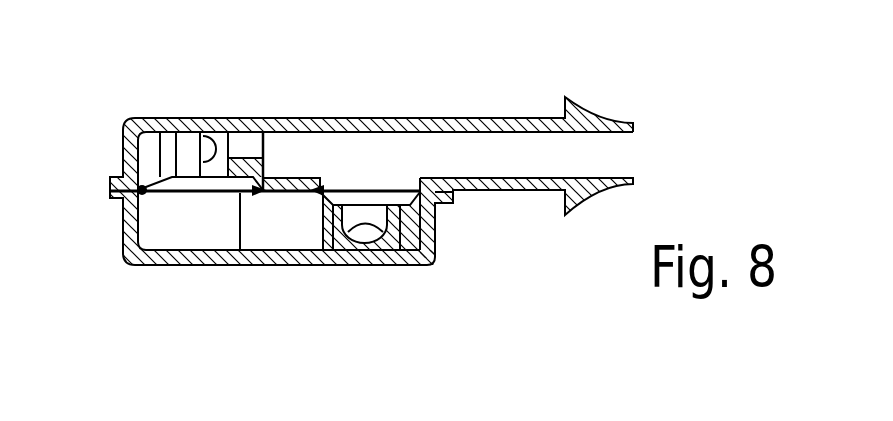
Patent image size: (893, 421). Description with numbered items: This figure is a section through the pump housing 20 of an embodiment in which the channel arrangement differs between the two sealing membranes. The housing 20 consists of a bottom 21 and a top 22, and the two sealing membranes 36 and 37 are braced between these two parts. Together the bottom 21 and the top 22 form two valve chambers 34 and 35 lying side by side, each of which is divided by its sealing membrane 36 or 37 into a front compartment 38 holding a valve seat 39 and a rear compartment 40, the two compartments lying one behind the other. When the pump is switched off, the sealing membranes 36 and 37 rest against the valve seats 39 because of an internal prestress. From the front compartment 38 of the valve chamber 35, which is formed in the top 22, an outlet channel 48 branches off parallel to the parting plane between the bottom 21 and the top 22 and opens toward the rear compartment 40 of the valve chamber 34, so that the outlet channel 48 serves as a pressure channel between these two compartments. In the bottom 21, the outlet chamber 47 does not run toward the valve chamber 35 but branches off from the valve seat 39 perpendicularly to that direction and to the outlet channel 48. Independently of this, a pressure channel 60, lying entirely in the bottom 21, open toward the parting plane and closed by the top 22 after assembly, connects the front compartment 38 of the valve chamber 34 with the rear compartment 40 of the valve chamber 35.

The housing 20 is at (299, 88).
The bottom 21 is at (224, 258).
The top 22 is at (252, 125).
The valve chamber 34 is at (409, 255).
The valve chamber 35 is at (178, 250).
The sealing membrane 36 is at (323, 200).
The sealing membrane 37 is at (190, 183).
The front compartment 38 is at (150, 157).
The valve seat 39 is at (168, 155).
The rear compartment 40 is at (383, 190).
The outlet chamber 47 is at (368, 236).
The outlet channel 48 is at (310, 152).
The pressure channel 60 is at (270, 230).